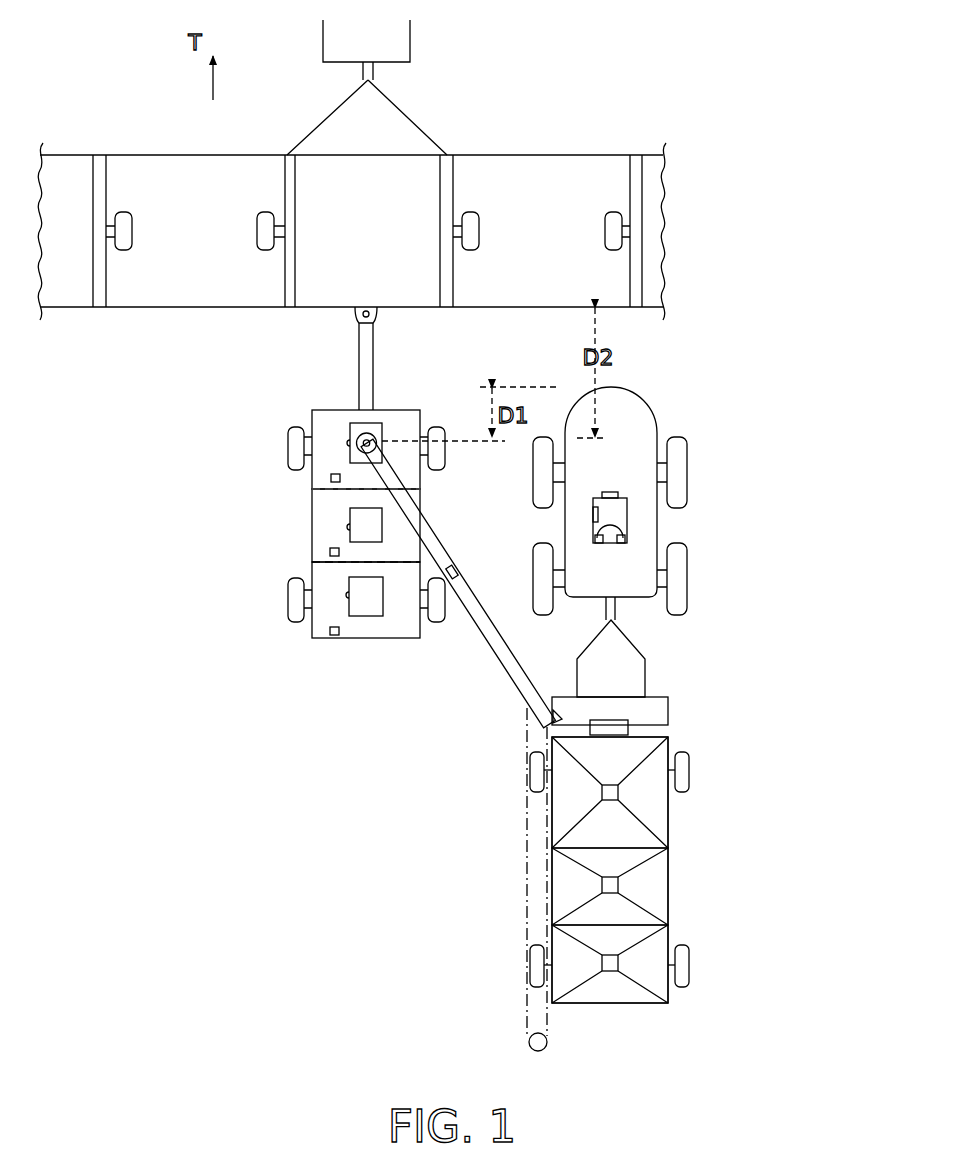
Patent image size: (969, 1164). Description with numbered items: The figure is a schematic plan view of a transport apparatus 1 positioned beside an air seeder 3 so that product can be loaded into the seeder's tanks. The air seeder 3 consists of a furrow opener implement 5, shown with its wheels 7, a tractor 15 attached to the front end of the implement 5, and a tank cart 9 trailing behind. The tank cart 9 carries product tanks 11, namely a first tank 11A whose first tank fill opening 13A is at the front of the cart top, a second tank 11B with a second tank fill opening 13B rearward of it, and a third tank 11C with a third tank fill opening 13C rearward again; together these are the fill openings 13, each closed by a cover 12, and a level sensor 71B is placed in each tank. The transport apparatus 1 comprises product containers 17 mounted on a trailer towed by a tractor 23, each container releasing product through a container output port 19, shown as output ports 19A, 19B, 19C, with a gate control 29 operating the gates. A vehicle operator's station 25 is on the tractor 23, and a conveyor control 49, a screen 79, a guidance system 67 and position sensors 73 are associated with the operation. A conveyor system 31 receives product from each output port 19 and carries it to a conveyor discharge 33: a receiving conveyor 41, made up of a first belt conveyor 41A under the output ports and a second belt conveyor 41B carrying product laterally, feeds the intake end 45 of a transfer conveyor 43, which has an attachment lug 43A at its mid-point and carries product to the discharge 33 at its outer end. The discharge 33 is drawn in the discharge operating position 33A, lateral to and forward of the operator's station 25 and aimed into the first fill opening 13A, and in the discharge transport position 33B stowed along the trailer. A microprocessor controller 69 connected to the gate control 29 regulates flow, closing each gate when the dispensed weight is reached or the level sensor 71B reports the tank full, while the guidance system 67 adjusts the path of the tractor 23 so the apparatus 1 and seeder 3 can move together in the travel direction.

The transport apparatus 1 is at (829, 583).
The air seeder 3 is at (595, 105).
The furrow opener implement 5 is at (482, 155).
The wheels 7 is at (478, 218).
The tank cart 9 is at (312, 640).
The product tanks 11 is at (312, 478).
The first tank 11A is at (366, 449).
The second tank 11B is at (312, 550).
The third tank 11C is at (372, 638).
The cover 12 is at (372, 602).
The fill opening 13 is at (352, 423).
The first tank fill opening 13A is at (366, 443).
The second tank fill opening 13B is at (348, 513).
The third tank fill opening 13C is at (348, 608).
The tractor 15 is at (410, 38).
The product containers 17 is at (550, 880).
The container output port 19 is at (618, 792).
The first output port 19A is at (610, 792).
The second output port 19B is at (618, 885).
The third output port 19C is at (618, 963).
The tractor 23 is at (638, 397).
The vehicle operator's station 25 is at (618, 522).
The gate control 29 is at (598, 513).
The conveyor system 31 is at (465, 700).
The conveyor discharge 33 is at (378, 436).
The discharge operating position 33A is at (367, 443).
The discharge transport position 33B is at (530, 1047).
The receiving conveyor 41 is at (720, 692).
The first belt conveyor 41A is at (620, 714).
The second belt conveyor 41B is at (655, 695).
The transfer conveyor 43 is at (477, 627).
The attachment lug 43A is at (458, 568).
The intake end 45 is at (530, 718).
The conveyor control 49 is at (628, 538).
The guidance system 67 is at (348, 443).
The microprocessor controller 69 is at (600, 547).
The level sensor 71B is at (335, 640).
The position sensors 73 is at (360, 452).
The screen 79 is at (613, 492).